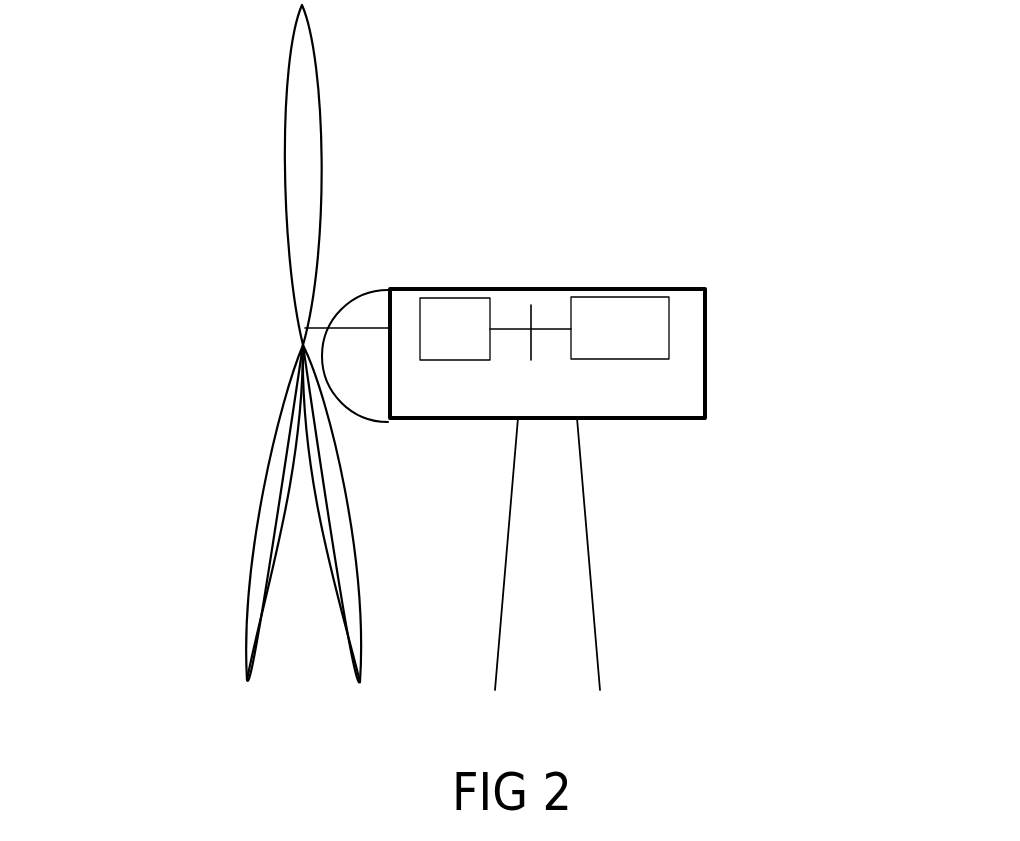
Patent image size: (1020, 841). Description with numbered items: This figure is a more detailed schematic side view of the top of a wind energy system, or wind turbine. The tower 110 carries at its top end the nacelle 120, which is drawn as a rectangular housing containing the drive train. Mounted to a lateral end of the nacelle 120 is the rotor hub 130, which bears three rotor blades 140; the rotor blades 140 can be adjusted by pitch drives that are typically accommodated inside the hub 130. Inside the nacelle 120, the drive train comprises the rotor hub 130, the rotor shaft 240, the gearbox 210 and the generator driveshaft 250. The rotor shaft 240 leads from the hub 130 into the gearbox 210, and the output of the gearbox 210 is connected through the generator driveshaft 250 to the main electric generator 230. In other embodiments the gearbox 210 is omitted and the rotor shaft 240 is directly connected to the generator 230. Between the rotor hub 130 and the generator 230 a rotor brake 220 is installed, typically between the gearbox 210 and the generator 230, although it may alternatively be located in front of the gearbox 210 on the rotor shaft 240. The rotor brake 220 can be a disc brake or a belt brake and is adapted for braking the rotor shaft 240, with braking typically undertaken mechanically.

The tower 110 is at (557, 617).
The nacelle 120 is at (705, 333).
The rotor hub 130 is at (347, 298).
The rotor blades 140 is at (283, 208).
The gearbox 210 is at (463, 307).
The rotor brake 220 is at (555, 332).
The main electric generator 230 is at (637, 315).
The rotor shaft 240 is at (350, 327).
The generator driveshaft 250 is at (529, 337).